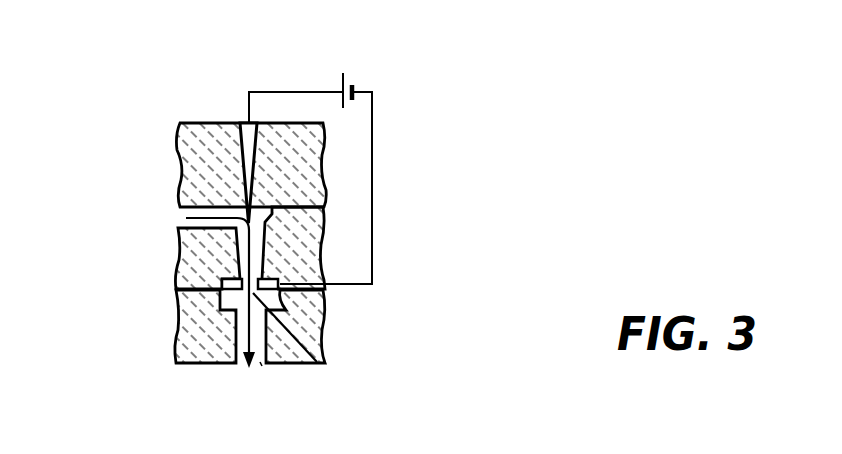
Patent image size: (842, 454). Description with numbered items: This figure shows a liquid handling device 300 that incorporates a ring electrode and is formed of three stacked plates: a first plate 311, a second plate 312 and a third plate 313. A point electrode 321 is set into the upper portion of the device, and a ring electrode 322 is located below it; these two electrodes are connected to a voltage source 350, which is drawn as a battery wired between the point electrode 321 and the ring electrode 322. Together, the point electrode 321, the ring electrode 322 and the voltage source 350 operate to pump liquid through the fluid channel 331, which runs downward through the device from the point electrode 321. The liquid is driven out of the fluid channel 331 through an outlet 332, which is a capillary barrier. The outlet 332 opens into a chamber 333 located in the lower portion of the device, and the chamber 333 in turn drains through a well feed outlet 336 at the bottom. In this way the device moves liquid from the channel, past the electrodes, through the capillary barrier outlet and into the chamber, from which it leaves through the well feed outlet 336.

The liquid handling device 300 is at (191, 96).
The first plate 311 is at (315, 158).
The second plate 312 is at (313, 238).
The third plate 313 is at (312, 323).
The point electrode 321 is at (238, 163).
The ring electrode 322 is at (228, 280).
The fluid channel 331 is at (183, 220).
The outlet 332 is at (317, 362).
The chamber 333 is at (226, 300).
The well feed outlet 336 is at (260, 362).
The voltage source 350 is at (352, 90).